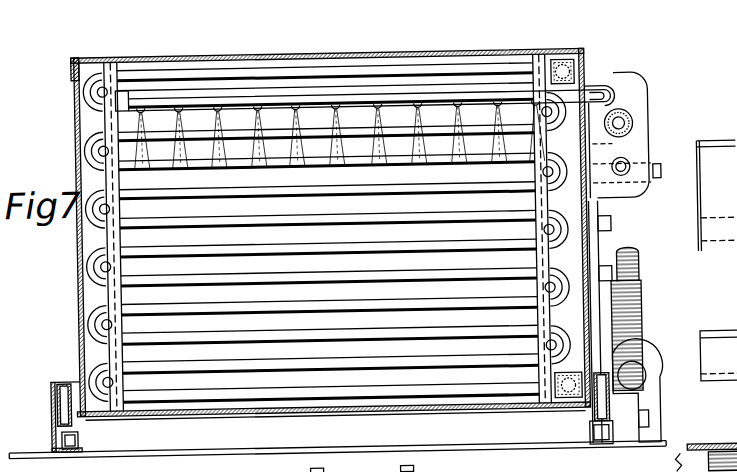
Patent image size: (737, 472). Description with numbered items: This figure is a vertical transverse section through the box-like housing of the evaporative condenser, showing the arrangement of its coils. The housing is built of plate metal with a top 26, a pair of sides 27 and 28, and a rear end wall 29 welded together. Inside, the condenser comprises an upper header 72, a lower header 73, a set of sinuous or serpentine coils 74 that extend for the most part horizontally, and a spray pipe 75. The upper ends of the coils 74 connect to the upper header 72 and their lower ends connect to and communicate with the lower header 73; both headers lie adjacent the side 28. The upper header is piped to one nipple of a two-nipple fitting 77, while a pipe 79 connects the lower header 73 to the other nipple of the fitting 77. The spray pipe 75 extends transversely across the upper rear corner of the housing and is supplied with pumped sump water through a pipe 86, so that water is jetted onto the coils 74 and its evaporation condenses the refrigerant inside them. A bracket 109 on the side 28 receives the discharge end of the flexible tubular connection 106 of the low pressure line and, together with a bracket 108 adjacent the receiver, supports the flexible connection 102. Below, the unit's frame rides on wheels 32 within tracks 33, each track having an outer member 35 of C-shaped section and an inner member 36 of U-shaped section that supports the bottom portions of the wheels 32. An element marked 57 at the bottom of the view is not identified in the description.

The top 26 is at (371, 49).
The side 27 is at (79, 272).
The side 28 is at (587, 248).
The rear end wall 29 is at (471, 53).
The wheels 32 is at (60, 381).
The tracks 33 is at (48, 389).
The outer members 35 is at (724, 166).
The inner members 36 is at (51, 424).
The base plate 57 is at (337, 456).
The upper header 72 is at (578, 55).
The lower header 73 is at (559, 414).
The serpentine coils 74 is at (455, 338).
The spray pipe 75 is at (279, 93).
The two nipple fitting 77 is at (598, 211).
The pipe 79 is at (565, 325).
The pipe 86 is at (607, 90).
The flexible connection 102 is at (634, 166).
The flexible tubular connection 106 is at (630, 114).
The bracket 108 is at (653, 410).
The bracket 109 is at (648, 127).